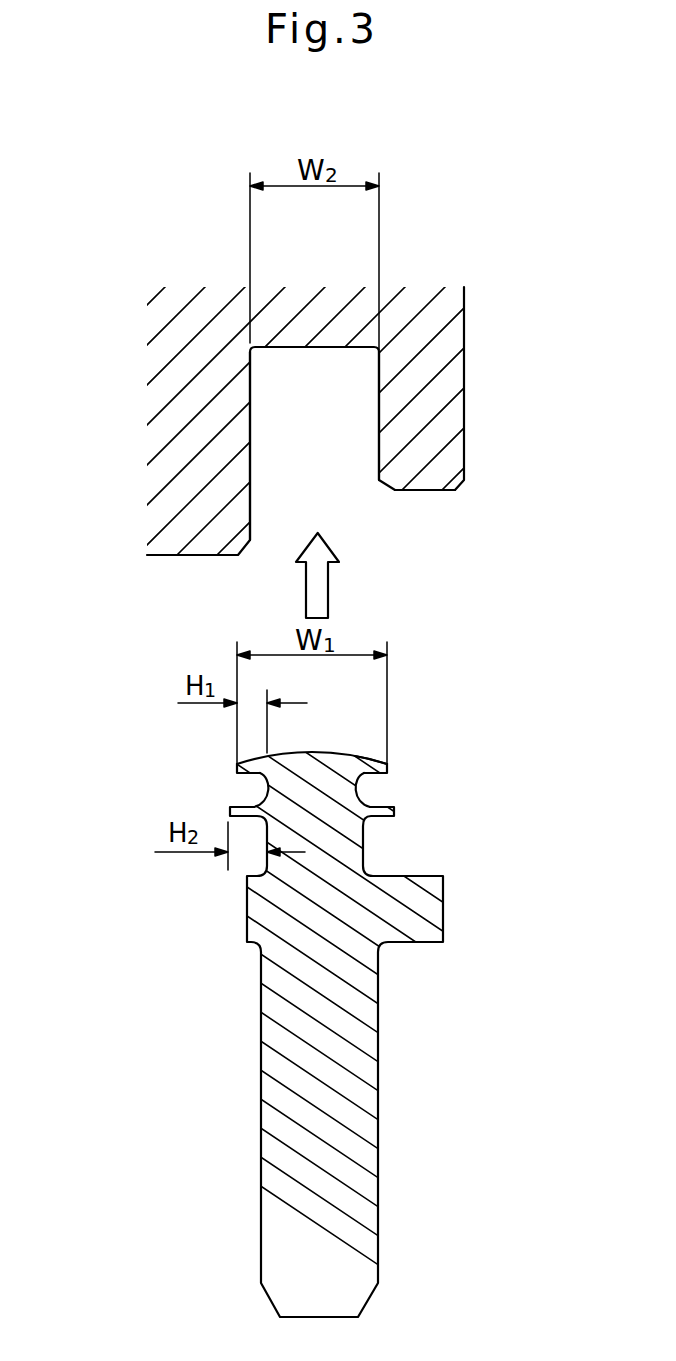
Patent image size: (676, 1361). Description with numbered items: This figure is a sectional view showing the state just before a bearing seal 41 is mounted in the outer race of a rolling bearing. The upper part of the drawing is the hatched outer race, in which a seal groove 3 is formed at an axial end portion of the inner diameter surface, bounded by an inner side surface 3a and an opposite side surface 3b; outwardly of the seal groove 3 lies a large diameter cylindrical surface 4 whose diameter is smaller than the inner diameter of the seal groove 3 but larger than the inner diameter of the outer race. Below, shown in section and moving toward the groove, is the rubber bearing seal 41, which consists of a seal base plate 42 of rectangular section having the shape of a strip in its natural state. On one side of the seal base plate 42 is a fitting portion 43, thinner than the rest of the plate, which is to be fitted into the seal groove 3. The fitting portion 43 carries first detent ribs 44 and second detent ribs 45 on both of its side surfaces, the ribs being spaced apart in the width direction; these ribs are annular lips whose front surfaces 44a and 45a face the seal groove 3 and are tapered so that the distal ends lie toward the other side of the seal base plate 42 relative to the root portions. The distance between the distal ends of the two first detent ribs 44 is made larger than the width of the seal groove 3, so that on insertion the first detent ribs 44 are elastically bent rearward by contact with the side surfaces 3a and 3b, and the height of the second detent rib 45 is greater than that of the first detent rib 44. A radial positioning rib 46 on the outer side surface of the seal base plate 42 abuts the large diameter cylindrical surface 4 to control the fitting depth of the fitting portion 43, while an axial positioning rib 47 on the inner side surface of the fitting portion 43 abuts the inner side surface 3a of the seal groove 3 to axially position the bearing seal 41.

The seal groove 3 is at (304, 436).
The inner side surface of the seal groove 3a is at (250, 433).
The side surface of the seal groove 3b is at (379, 415).
The large diameter cylindrical surface 4 is at (425, 490).
The bearing seal 41 is at (296, 956).
The seal base plate 42 is at (283, 1073).
The fitting portion 43 is at (315, 763).
The first detent rib 44 is at (253, 760).
The front surface of the first detent rib 44a is at (362, 757).
The second detent rib 45 is at (228, 808).
The front surface of the second detent rib 45a is at (246, 803).
The radial positioning rib 46 is at (443, 912).
The axial positioning rib 47 is at (245, 897).